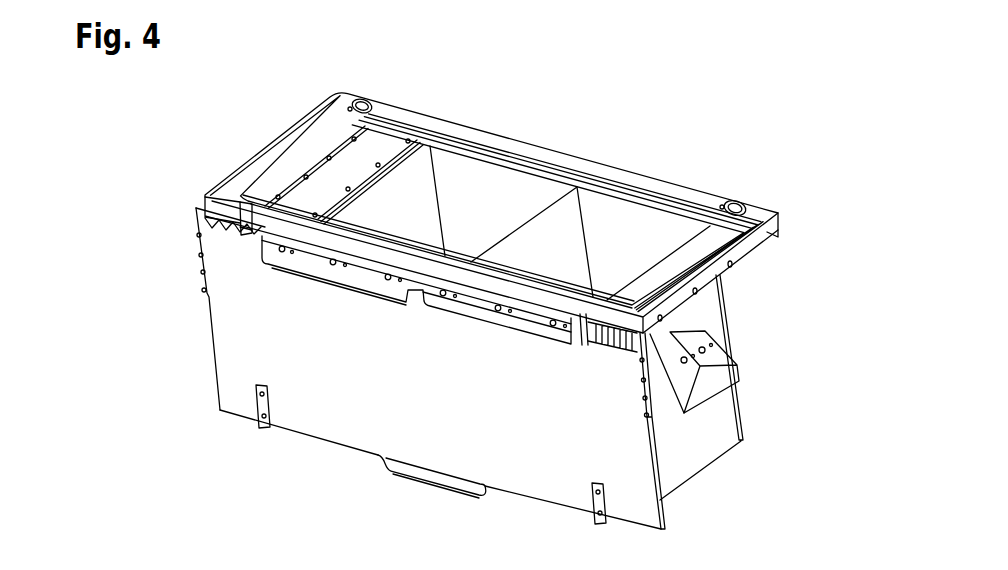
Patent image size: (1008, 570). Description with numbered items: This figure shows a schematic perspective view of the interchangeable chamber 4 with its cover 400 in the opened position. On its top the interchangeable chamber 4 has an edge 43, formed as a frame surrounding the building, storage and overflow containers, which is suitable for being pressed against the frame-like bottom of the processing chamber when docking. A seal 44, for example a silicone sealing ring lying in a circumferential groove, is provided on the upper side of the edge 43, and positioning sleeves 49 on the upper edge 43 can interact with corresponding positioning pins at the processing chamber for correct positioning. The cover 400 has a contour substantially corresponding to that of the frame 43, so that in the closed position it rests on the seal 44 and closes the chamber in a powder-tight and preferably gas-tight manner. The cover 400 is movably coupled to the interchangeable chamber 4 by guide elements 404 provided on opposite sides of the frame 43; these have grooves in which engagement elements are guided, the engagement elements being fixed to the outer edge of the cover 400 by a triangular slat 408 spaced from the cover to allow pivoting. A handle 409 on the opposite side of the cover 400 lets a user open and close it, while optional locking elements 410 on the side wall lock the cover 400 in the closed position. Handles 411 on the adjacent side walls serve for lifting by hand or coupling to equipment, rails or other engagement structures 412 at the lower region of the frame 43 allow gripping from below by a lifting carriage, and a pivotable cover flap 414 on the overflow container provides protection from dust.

The interchangeable chamber 4 is at (570, 148).
The edge 43 is at (488, 138).
The seal 44 is at (640, 190).
The positioning sleeves 49 is at (363, 98).
The cover 400 is at (230, 328).
The guide elements 404 is at (768, 252).
The triangular slat 408 is at (660, 406).
The handle 409 is at (465, 490).
The locking elements 410 is at (222, 212).
The handles 411 is at (720, 372).
The rails or other engagement structures 412 is at (212, 236).
The pivotable cover flap 414 is at (325, 182).